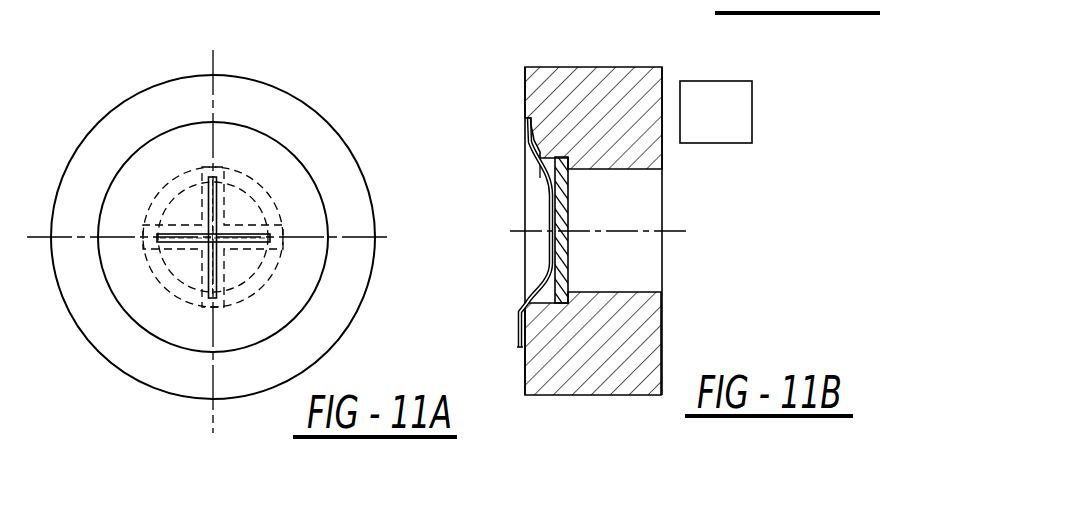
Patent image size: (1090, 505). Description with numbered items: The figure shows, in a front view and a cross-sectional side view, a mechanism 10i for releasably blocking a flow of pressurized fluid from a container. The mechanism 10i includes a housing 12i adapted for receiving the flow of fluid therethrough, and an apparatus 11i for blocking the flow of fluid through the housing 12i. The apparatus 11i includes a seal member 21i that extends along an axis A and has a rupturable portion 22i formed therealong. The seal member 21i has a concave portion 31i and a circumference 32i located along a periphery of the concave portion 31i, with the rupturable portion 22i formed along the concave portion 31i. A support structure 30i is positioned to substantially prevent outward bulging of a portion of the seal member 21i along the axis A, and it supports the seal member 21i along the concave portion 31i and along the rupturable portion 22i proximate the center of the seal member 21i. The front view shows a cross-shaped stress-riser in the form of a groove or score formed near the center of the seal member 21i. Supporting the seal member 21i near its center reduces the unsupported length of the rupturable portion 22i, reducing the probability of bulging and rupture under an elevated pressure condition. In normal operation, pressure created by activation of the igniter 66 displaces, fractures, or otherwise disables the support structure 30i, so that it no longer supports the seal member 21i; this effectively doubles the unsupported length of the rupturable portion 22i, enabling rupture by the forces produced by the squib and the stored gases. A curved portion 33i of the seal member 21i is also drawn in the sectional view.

In FIG. 11B, the mechanism 10i is at (615, 197).
In FIG. 11B, the apparatus 11i is at (668, 331).
In FIG. 11B, the housing 12i is at (596, 80).
In FIG. 11B, the seal member 21i is at (517, 338).
In FIG. 11B, the rupturable portion 22i is at (547, 193).
In FIG. 11A, the support structure 30i is at (255, 178).
In FIG. 11B, the support structure 30i is at (586, 195).
In FIG. 11B, the concave portion 31i is at (542, 182).
In FIG. 11B, the circumference 32i is at (520, 121).
In FIG. 11B, the curved portion 33i is at (550, 267).
In FIG. 11B, the igniter 66 is at (720, 92).
In FIG. 11B, the axis A is at (677, 231).